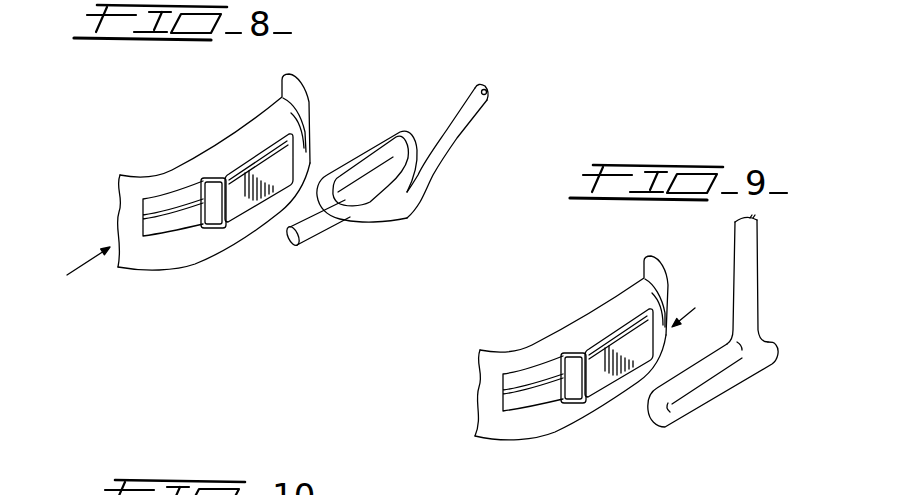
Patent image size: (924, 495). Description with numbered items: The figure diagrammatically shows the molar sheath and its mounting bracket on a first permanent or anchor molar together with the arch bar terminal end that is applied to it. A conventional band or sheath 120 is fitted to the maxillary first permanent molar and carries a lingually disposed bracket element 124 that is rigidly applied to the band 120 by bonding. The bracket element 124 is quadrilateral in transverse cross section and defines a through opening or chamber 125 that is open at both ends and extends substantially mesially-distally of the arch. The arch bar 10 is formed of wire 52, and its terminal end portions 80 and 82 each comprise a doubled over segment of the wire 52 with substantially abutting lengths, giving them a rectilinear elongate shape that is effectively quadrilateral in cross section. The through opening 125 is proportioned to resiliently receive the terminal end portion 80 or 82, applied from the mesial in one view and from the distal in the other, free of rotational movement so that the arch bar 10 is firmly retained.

In FIG. 8, the arch bar 10 is at (422, 153).
In FIG. 9, the arch bar 10 is at (733, 323).
In FIG. 8, the wire 52 is at (474, 110).
In FIG. 9, the wire 52 is at (750, 305).
In FIG. 8, the terminal end portion 80 is at (385, 126).
In FIG. 9, the terminal end portion 82 is at (743, 400).
In FIG. 8, the band or sheath 120 is at (176, 258).
In FIG. 9, the band or sheath 120 is at (571, 372).
In FIG. 8, the bracket element 124 is at (243, 208).
In FIG. 9, the bracket element 124 is at (619, 382).
In FIG. 8, the through opening 125 is at (211, 214).
In FIG. 9, the through opening 125 is at (544, 356).